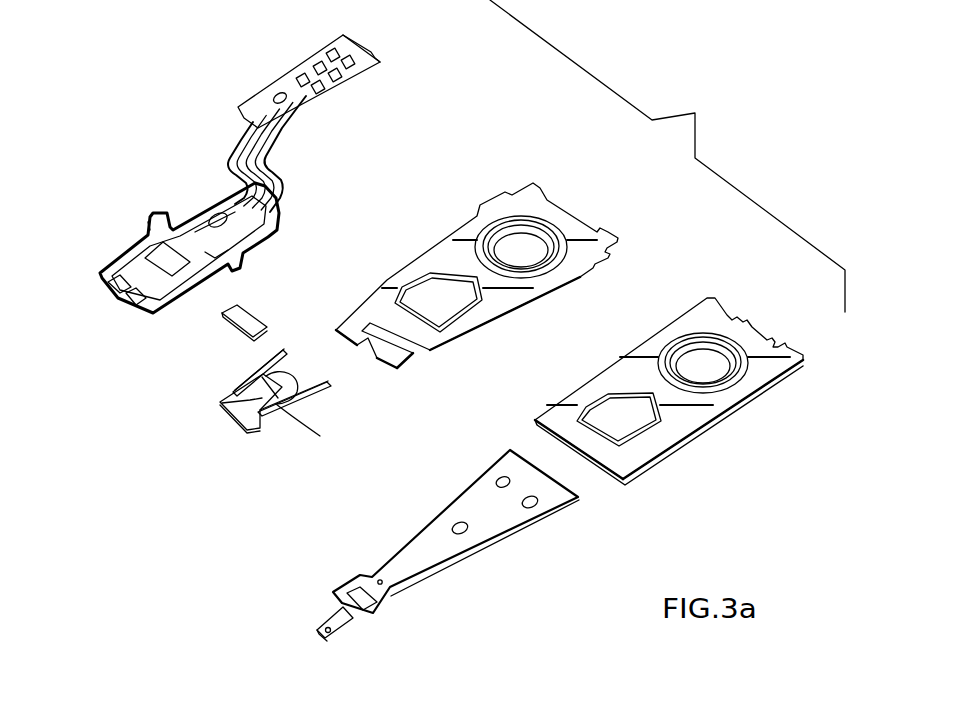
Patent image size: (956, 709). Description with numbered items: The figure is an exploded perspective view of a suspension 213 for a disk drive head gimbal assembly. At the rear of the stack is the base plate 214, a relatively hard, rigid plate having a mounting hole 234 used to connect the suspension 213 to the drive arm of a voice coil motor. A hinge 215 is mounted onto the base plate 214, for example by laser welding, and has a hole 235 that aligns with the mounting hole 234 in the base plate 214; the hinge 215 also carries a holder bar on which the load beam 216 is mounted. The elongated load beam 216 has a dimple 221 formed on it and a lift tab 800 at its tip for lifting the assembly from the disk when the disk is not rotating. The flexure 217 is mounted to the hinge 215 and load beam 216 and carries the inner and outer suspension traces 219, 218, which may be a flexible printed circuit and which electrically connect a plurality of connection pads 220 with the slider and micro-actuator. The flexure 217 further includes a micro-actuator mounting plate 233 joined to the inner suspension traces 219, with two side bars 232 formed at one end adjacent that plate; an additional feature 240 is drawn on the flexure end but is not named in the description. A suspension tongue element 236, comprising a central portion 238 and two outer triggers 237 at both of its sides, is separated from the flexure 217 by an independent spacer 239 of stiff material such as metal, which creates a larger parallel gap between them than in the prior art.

The suspension 213 is at (667, 156).
The base plate 214 is at (762, 318).
The hinge 215 is at (573, 212).
The load beam 216 is at (476, 562).
The flexure 217 is at (376, 43).
The outer suspension traces 218 is at (102, 272).
The inner suspension traces 219 is at (150, 230).
The connection pads 220 is at (347, 60).
The dimple 221 is at (382, 585).
The side bars 232 is at (157, 213).
The micro-actuator mounting plate 233 is at (150, 262).
The mounting hole 234 is at (700, 360).
The hole 235 is at (520, 254).
The suspension tongue element 236 is at (228, 428).
The outer triggers 237 is at (290, 418).
The central portion 238 is at (222, 403).
The independent spacer 239 is at (263, 304).
The pins 240 is at (112, 298).
The lift tab 800 is at (334, 623).